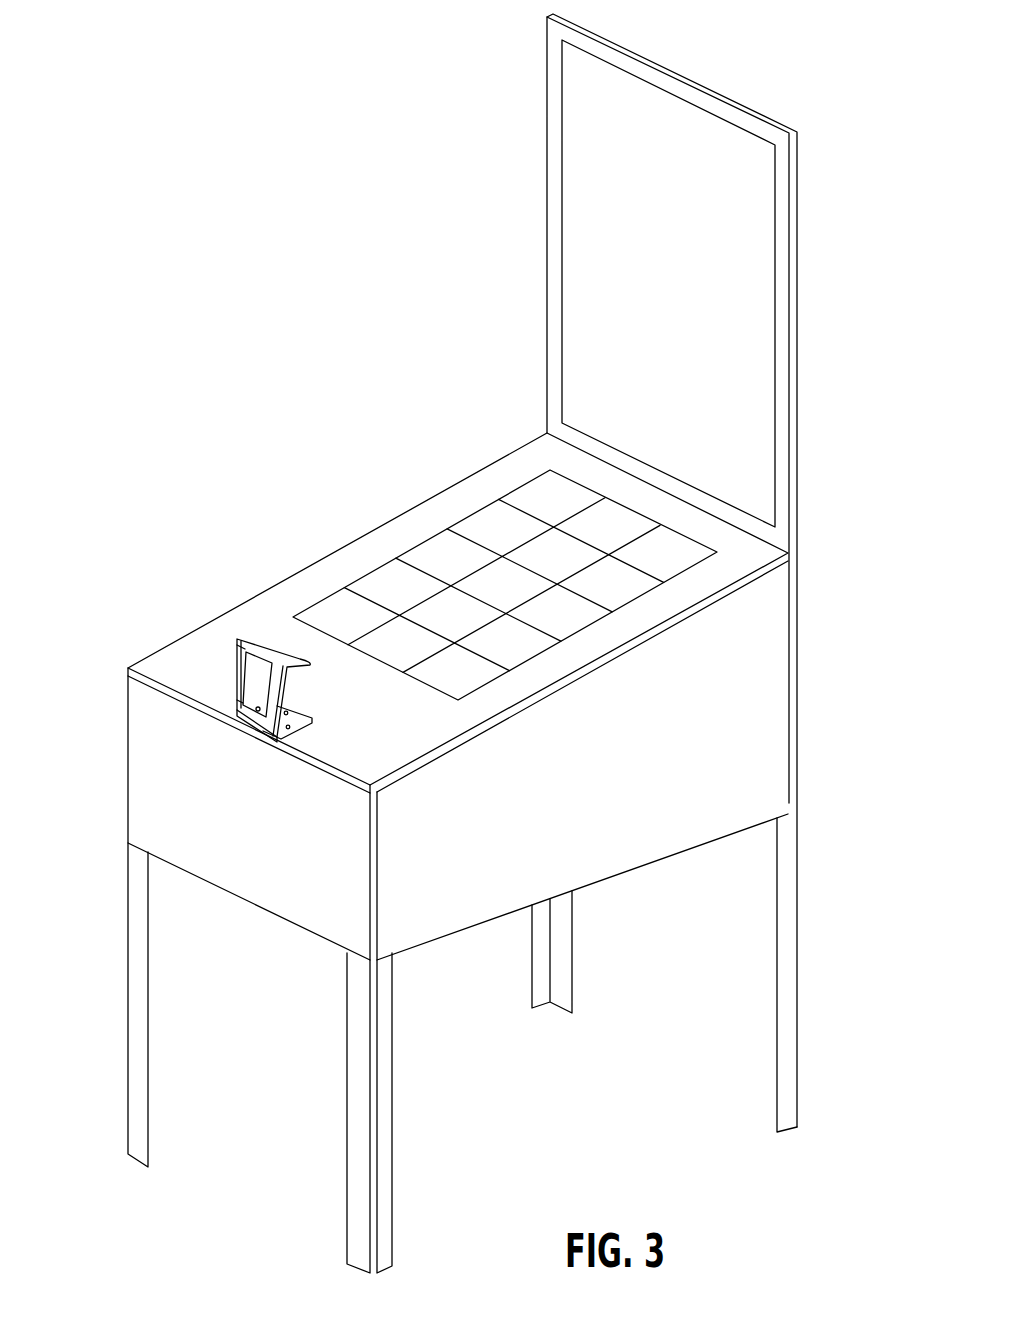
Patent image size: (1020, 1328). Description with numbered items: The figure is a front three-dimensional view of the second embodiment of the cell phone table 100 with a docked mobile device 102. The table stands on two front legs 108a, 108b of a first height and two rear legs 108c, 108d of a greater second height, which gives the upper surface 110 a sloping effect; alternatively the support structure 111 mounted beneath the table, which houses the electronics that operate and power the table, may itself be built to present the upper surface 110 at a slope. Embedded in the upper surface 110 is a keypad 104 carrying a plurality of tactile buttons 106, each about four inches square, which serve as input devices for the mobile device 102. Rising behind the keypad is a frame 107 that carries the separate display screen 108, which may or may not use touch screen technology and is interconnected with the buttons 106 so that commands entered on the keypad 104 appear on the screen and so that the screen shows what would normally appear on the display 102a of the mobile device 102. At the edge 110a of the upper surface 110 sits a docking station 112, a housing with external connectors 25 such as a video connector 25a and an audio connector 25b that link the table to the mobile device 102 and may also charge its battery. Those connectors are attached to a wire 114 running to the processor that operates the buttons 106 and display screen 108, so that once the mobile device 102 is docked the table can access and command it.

The cell phone table 100 is at (461, 643).
The mobile device 102 is at (240, 634).
The display of the mobile device 102a is at (194, 620).
The keypad 104 is at (509, 585).
The tactile buttons 106 is at (534, 627).
The display frame 107 is at (656, 570).
The display screen 108 is at (714, 283).
The front leg 108a is at (96, 1005).
The front leg 108b is at (428, 1113).
The rear leg 108c is at (600, 952).
The rear leg 108d is at (827, 975).
The upper surface 110 is at (431, 613).
The edge of upper surface 110a is at (222, 680).
The support structure 111 is at (496, 792).
The docking station 112 is at (240, 611).
The wire 114 is at (174, 737).
The external connectors 25 is at (336, 717).
The video connector 25a is at (346, 724).
The audio connector 25b is at (325, 743).